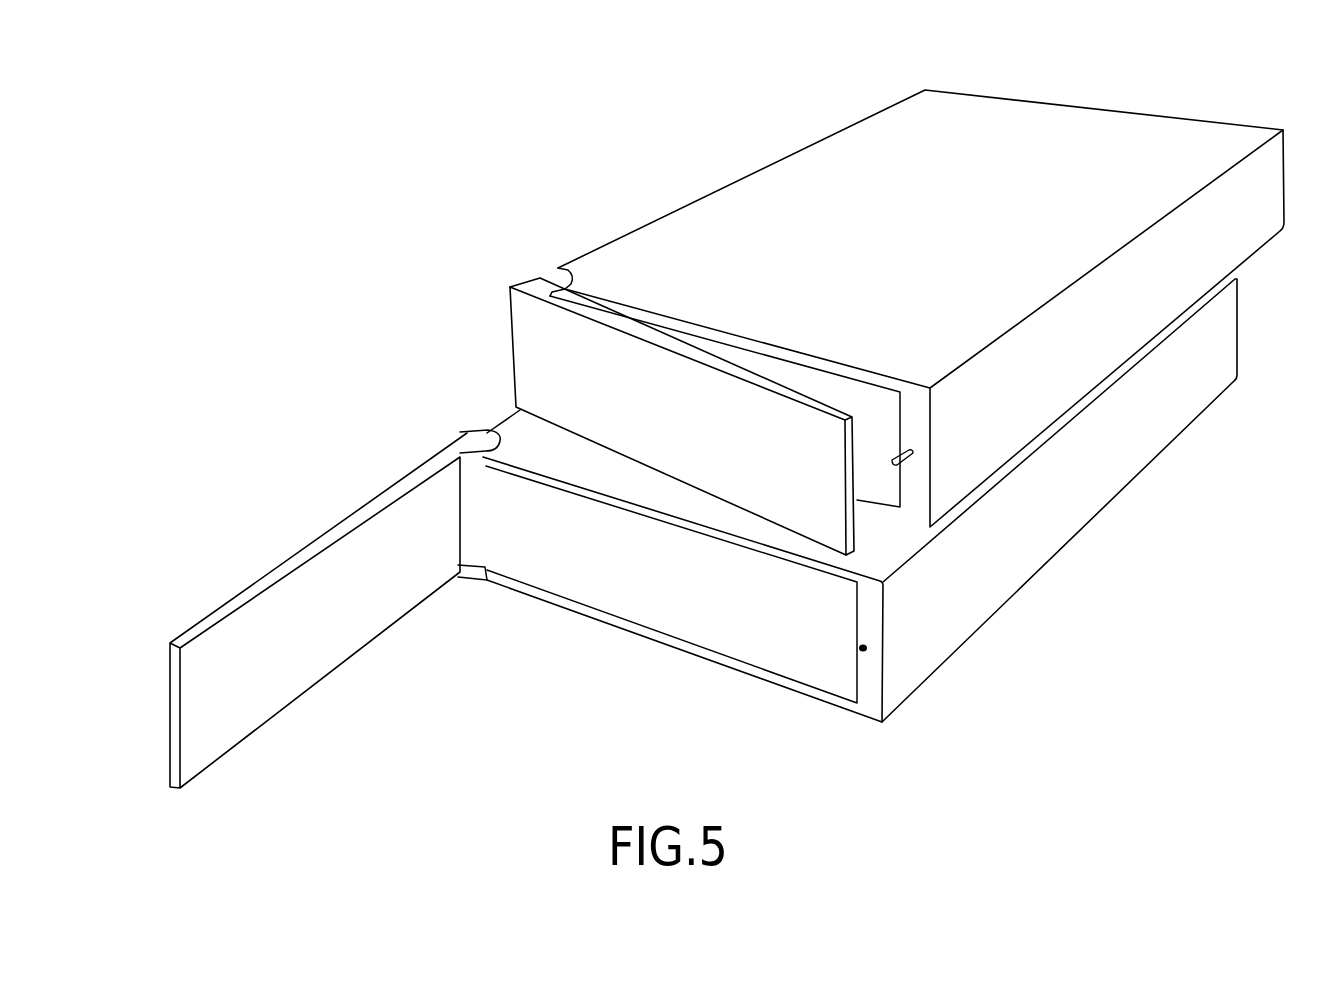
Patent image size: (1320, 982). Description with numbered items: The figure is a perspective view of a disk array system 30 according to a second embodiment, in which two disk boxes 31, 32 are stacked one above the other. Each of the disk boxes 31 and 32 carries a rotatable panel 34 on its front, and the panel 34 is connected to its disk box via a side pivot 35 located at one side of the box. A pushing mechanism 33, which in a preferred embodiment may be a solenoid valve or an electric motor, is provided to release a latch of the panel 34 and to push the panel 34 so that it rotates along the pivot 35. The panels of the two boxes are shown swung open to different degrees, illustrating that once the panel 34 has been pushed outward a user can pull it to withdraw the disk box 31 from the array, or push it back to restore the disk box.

The disk array system 30 is at (557, 183).
The disk box 31 is at (1253, 221).
The disk box 32 is at (1200, 392).
The pushing mechanism 33 is at (903, 450).
The rotatable panel 34 is at (542, 352).
The side pivot 35 is at (544, 268).